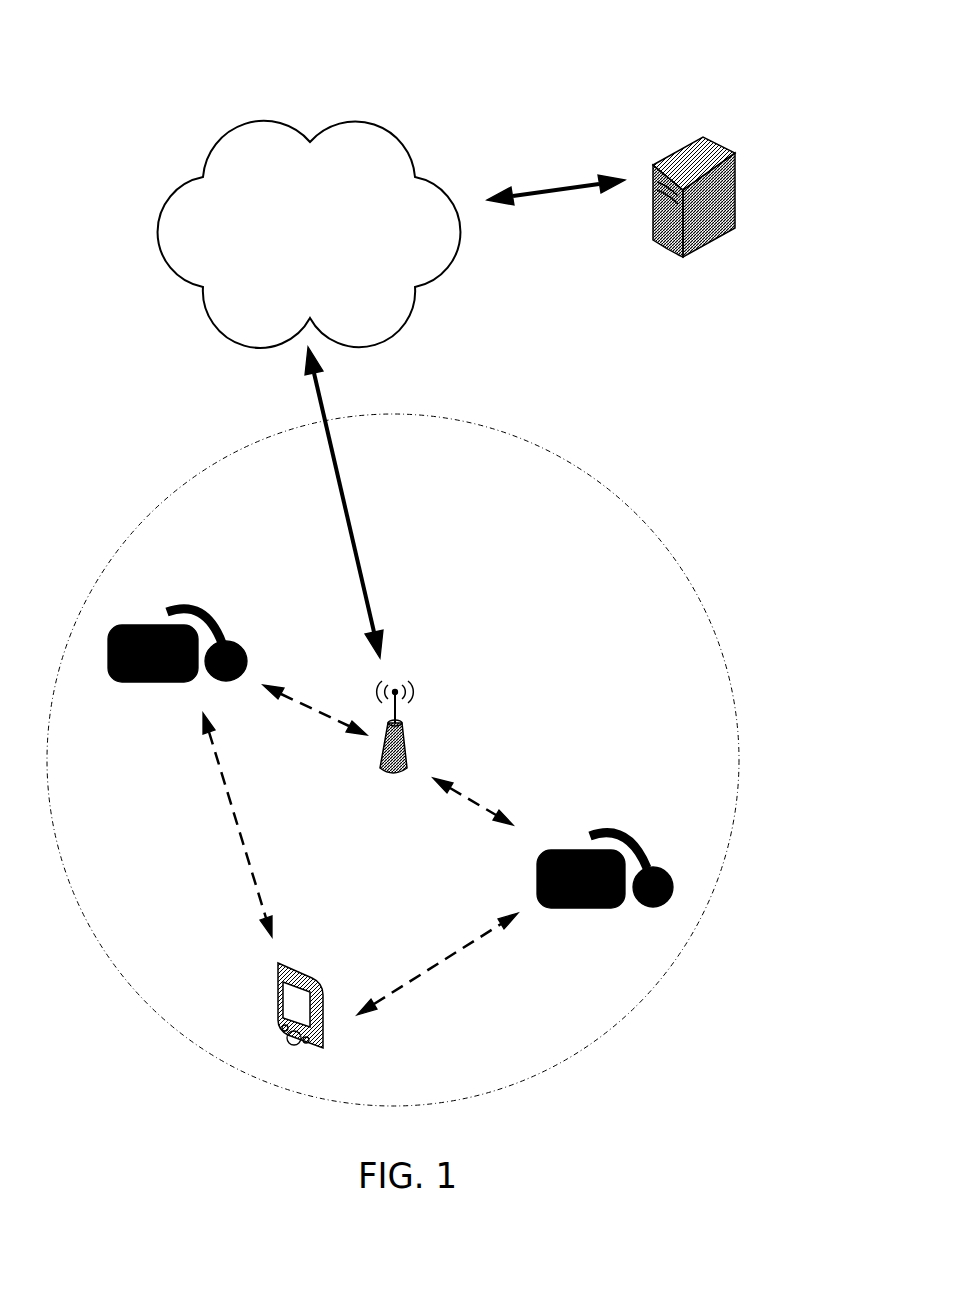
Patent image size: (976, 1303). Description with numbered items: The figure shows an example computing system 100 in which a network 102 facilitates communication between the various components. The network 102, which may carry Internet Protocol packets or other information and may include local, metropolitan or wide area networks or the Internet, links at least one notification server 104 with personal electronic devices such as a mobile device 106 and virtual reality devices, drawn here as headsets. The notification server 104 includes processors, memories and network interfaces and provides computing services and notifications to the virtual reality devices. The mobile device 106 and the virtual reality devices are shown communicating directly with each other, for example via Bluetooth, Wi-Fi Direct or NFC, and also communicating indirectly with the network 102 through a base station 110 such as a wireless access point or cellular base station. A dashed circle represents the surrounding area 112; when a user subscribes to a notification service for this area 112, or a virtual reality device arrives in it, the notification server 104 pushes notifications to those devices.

The computing system 100 is at (80, 76).
The network 102 is at (225, 130).
The notification server 104 is at (668, 155).
The mobile device 106 is at (322, 1003).
The base station 110 is at (403, 722).
The surrounding area 112 is at (134, 517).